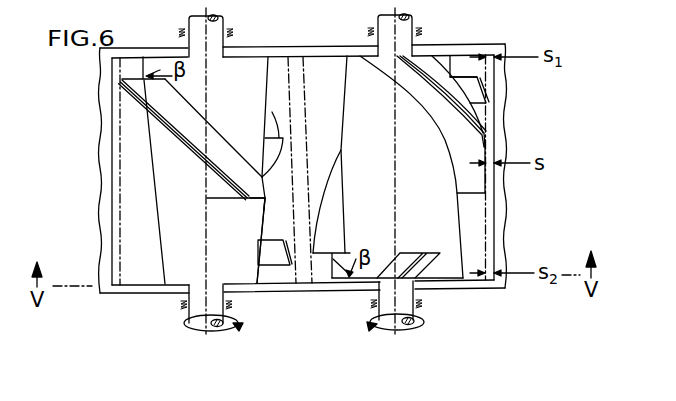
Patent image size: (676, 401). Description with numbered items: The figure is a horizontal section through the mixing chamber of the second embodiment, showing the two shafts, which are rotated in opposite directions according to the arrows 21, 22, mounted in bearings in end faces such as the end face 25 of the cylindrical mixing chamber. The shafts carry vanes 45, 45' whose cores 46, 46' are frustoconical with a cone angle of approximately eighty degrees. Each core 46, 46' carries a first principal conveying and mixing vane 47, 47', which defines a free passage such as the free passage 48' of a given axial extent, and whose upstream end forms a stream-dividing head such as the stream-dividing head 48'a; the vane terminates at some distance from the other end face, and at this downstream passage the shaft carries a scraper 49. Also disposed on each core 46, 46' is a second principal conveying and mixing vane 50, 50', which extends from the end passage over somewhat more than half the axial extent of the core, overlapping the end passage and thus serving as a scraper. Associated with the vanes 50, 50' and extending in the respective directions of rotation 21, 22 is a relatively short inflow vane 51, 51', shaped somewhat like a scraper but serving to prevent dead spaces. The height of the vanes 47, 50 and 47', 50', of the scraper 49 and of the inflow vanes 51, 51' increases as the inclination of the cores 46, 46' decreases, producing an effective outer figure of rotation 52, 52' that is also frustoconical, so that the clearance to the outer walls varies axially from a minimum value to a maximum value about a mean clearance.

The arrow of direction of rotation 21 is at (393, 184).
The arrow of direction of rotation 22 is at (215, 185).
The end face 25 is at (299, 54).
The vane 45 is at (430, 168).
The vane 45' is at (187, 199).
The core 46 is at (430, 167).
The core 46' is at (160, 170).
The first principal conveying and mixing vane 47 is at (344, 201).
The first principal conveying and mixing vane 47' is at (215, 128).
The free passage 48' is at (262, 270).
The stream-dividing head 48'a is at (279, 218).
The scraper 49 is at (427, 265).
The second principal conveying and mixing vane 50 is at (452, 102).
The second principal conveying and mixing vane 50' is at (201, 137).
The inflow vane 51 is at (499, 88).
The inflow vane 51' is at (290, 291).
The outer figure of rotation 52 is at (517, 167).
The outer figure of rotation 52' is at (86, 171).